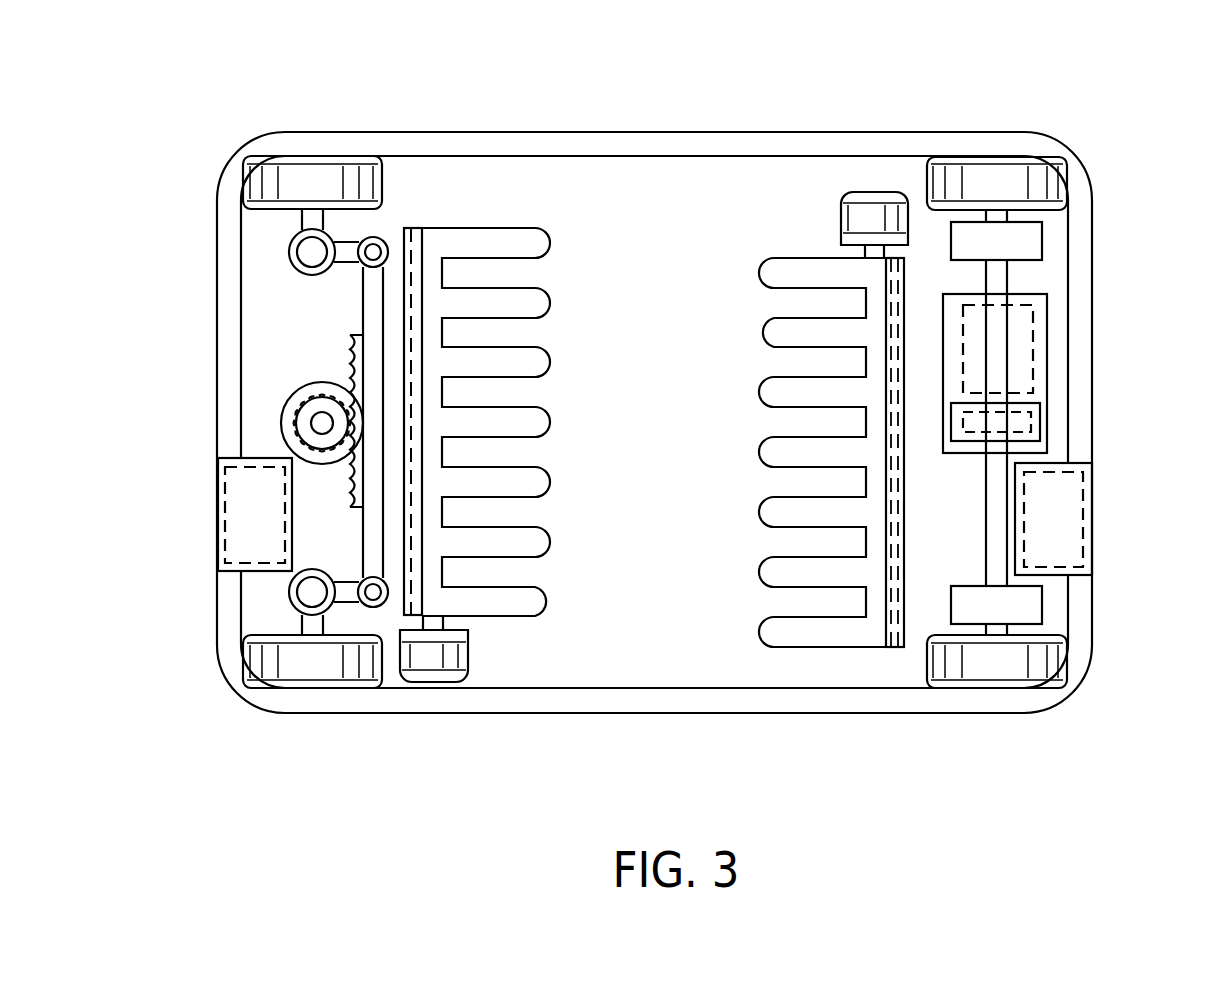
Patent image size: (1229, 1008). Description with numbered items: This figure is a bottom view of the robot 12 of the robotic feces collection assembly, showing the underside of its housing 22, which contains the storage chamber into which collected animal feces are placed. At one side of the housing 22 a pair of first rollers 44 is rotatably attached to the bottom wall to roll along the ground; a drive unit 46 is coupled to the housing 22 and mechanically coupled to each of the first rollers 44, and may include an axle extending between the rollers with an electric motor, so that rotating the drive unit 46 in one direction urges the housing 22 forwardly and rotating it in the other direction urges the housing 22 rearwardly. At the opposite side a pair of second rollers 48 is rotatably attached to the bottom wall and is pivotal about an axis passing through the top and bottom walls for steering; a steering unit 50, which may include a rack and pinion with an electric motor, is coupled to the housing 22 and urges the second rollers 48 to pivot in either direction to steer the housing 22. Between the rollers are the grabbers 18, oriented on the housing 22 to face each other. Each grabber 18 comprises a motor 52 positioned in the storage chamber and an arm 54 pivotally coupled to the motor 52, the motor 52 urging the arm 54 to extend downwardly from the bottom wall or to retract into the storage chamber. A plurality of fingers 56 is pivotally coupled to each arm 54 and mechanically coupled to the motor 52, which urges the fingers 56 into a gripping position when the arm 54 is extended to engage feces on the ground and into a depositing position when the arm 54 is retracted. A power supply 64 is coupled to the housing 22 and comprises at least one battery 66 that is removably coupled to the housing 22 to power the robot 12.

The robot 12 is at (897, 113).
The grabbers 18 is at (663, 417).
The housing 22 is at (758, 147).
The first rollers 44 is at (1000, 157).
The drive unit 46 is at (1048, 357).
The second rollers 48 is at (300, 157).
The steering unit 50 is at (297, 390).
The motor 52 is at (468, 680).
The arm 54 is at (403, 233).
The fingers 56 is at (550, 542).
The power supply 64 is at (1111, 501).
The battery 66 is at (1073, 498).